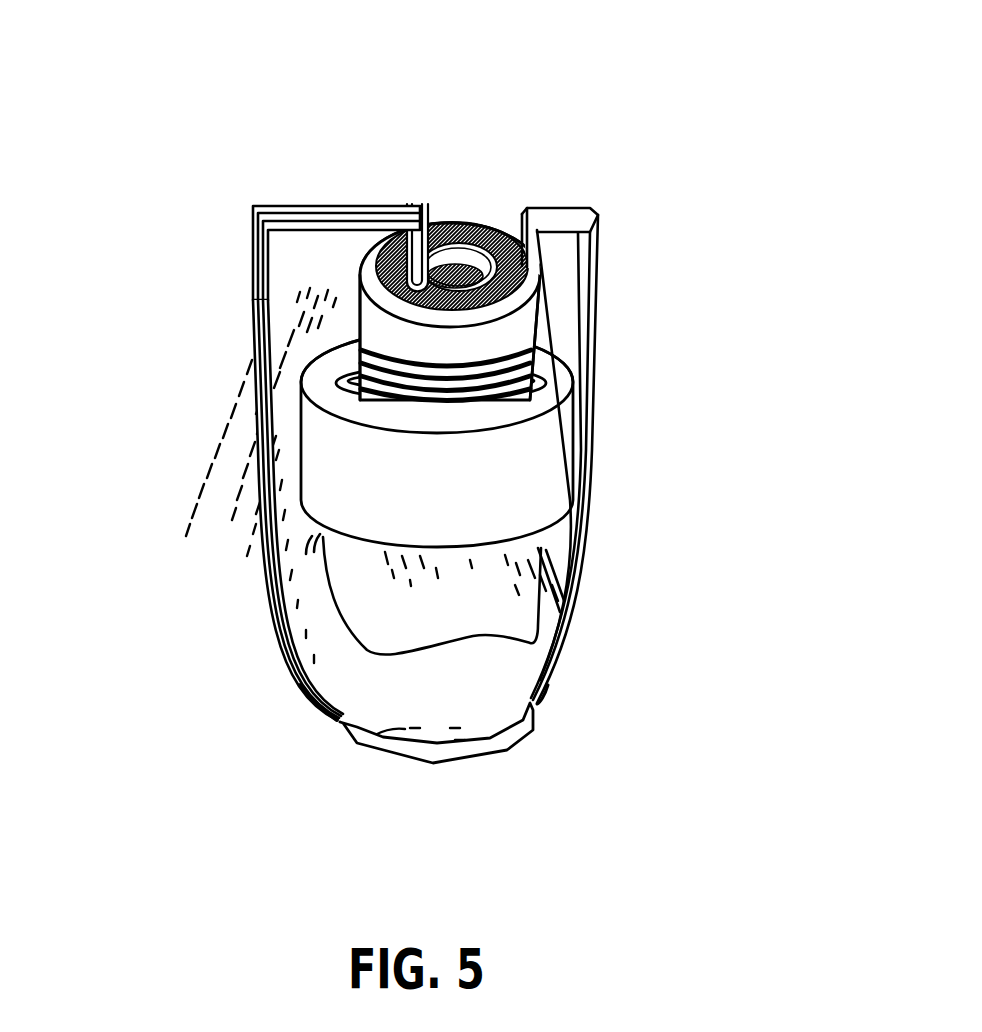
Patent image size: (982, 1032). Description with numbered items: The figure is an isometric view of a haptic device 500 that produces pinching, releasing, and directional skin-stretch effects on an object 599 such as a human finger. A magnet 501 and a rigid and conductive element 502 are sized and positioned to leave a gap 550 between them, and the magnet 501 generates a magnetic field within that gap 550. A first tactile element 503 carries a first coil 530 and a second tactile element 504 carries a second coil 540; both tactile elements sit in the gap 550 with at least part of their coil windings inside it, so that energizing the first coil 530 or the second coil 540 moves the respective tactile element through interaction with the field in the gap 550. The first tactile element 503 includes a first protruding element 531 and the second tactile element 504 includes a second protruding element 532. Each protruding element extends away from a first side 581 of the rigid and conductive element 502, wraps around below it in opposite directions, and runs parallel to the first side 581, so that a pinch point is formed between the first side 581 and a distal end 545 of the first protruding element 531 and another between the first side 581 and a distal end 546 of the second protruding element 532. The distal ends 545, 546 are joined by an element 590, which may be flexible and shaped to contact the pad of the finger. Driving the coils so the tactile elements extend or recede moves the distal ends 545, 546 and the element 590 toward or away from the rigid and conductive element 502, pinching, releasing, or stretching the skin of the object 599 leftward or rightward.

The haptic device 500 is at (425, 428).
The magnet 501 is at (453, 263).
The rigid and conductive element 502 is at (396, 437).
The first tactile element 503 is at (548, 243).
The second tactile element 504 is at (410, 204).
The first coil 530 is at (533, 382).
The first protruding element 531 is at (255, 308).
The second protruding element 532 is at (585, 260).
The second coil 540 is at (497, 230).
The distal end of the first protruding element 545 is at (313, 715).
The distal end of the second protruding element 546 is at (540, 704).
The gap 550 is at (340, 383).
The first side of the rigid and conductive element 581 is at (447, 558).
The connecting element 590 is at (467, 748).
The object 599 is at (452, 677).